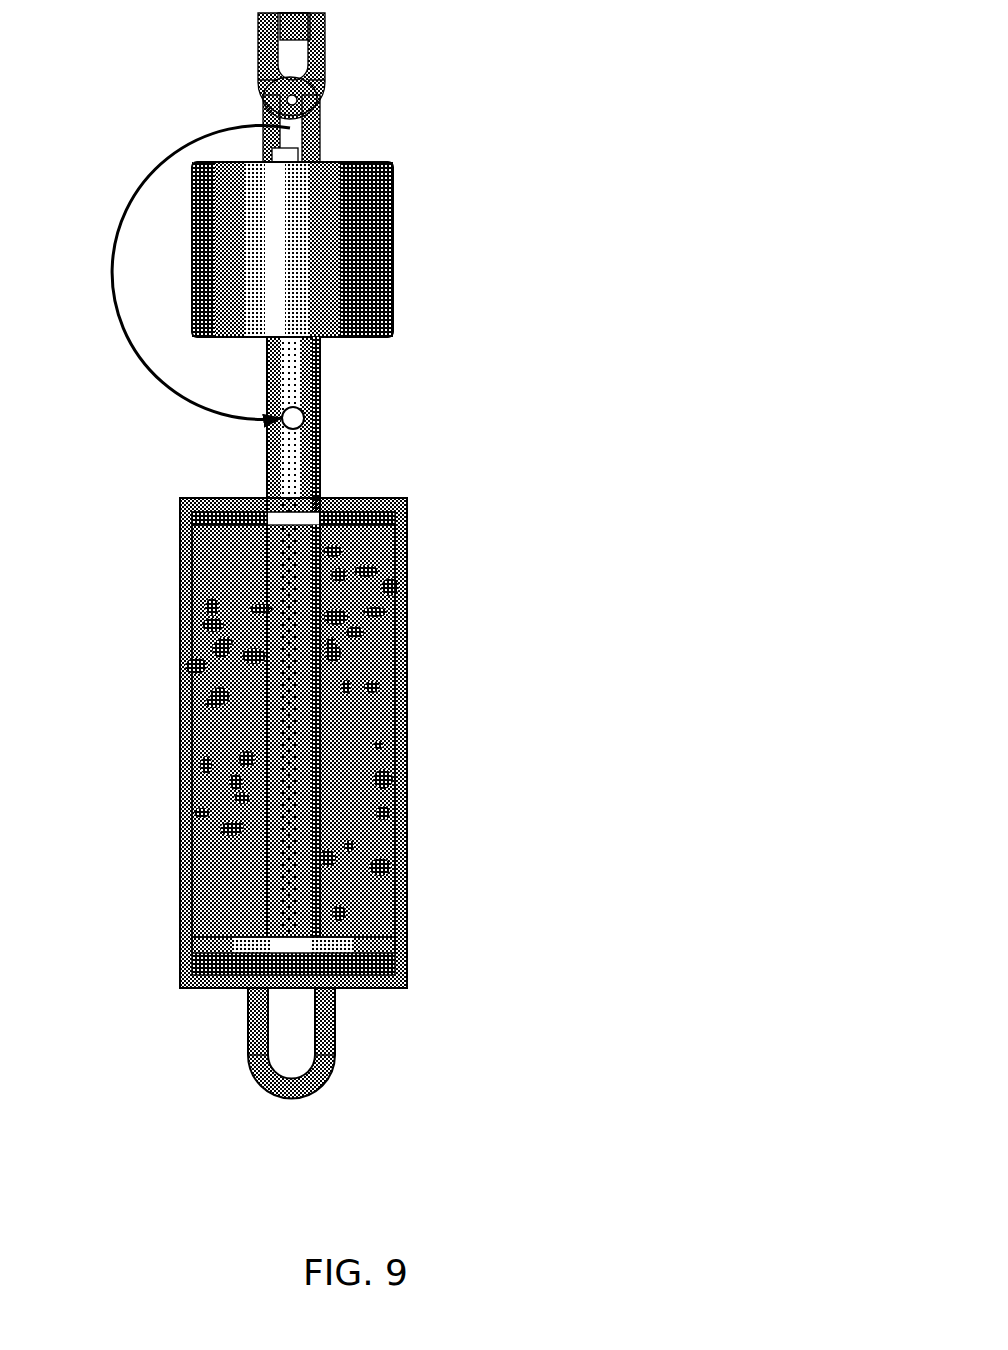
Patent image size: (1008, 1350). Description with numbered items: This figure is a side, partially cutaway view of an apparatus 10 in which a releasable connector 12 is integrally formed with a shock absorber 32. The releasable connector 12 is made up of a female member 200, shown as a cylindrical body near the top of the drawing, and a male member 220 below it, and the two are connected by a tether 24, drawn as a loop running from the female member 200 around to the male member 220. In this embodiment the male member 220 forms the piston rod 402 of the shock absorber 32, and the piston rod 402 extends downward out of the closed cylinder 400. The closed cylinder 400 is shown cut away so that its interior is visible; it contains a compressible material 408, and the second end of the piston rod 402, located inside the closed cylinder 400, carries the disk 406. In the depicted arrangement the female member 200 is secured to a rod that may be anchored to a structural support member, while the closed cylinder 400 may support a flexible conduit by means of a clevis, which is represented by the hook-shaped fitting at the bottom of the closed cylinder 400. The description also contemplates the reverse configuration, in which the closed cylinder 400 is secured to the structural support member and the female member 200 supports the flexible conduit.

The apparatus 10 is at (585, 182).
The releasable connector 12 is at (427, 172).
The tether 24 is at (107, 355).
The shock absorber 32 is at (513, 788).
The female member 200 is at (380, 249).
The male member 220 is at (303, 393).
The closed cylinder 400 is at (376, 798).
The piston rod 402 is at (293, 463).
The disk 406 is at (386, 901).
The compressible material 408 is at (380, 486).